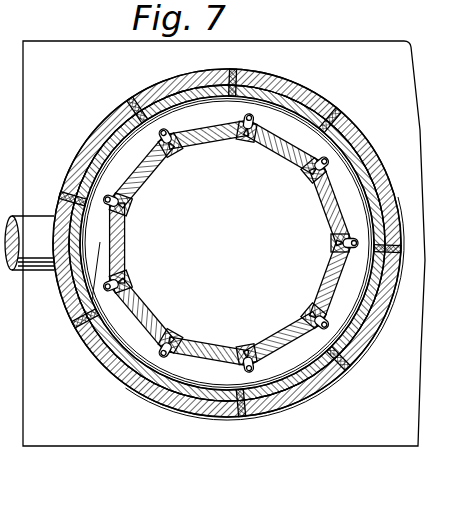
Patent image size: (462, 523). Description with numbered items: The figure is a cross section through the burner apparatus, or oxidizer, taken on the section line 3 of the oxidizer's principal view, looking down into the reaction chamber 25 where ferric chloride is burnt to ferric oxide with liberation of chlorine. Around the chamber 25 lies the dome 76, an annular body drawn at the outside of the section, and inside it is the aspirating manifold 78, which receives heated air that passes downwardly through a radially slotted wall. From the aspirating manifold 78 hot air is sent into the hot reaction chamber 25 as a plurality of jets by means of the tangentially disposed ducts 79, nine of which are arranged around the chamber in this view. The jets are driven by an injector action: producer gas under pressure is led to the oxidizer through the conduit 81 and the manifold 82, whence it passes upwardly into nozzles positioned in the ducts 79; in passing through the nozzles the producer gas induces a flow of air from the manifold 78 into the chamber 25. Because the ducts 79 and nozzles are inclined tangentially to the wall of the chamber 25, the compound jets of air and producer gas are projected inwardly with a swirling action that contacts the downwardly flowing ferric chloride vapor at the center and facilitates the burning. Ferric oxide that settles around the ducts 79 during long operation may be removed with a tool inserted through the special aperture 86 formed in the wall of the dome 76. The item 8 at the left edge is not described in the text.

The section line 3- 3 is at (255, 242).
The shaft 8 is at (32, 225).
The reaction chamber 25 is at (308, 263).
The dome 76 is at (107, 113).
The aspirating manifold 78 is at (230, 242).
The tangentially disposed ducts 79 is at (118, 275).
The conduit 81 is at (72, 198).
The manifold 82 is at (148, 346).
The special aperture 86 is at (333, 120).